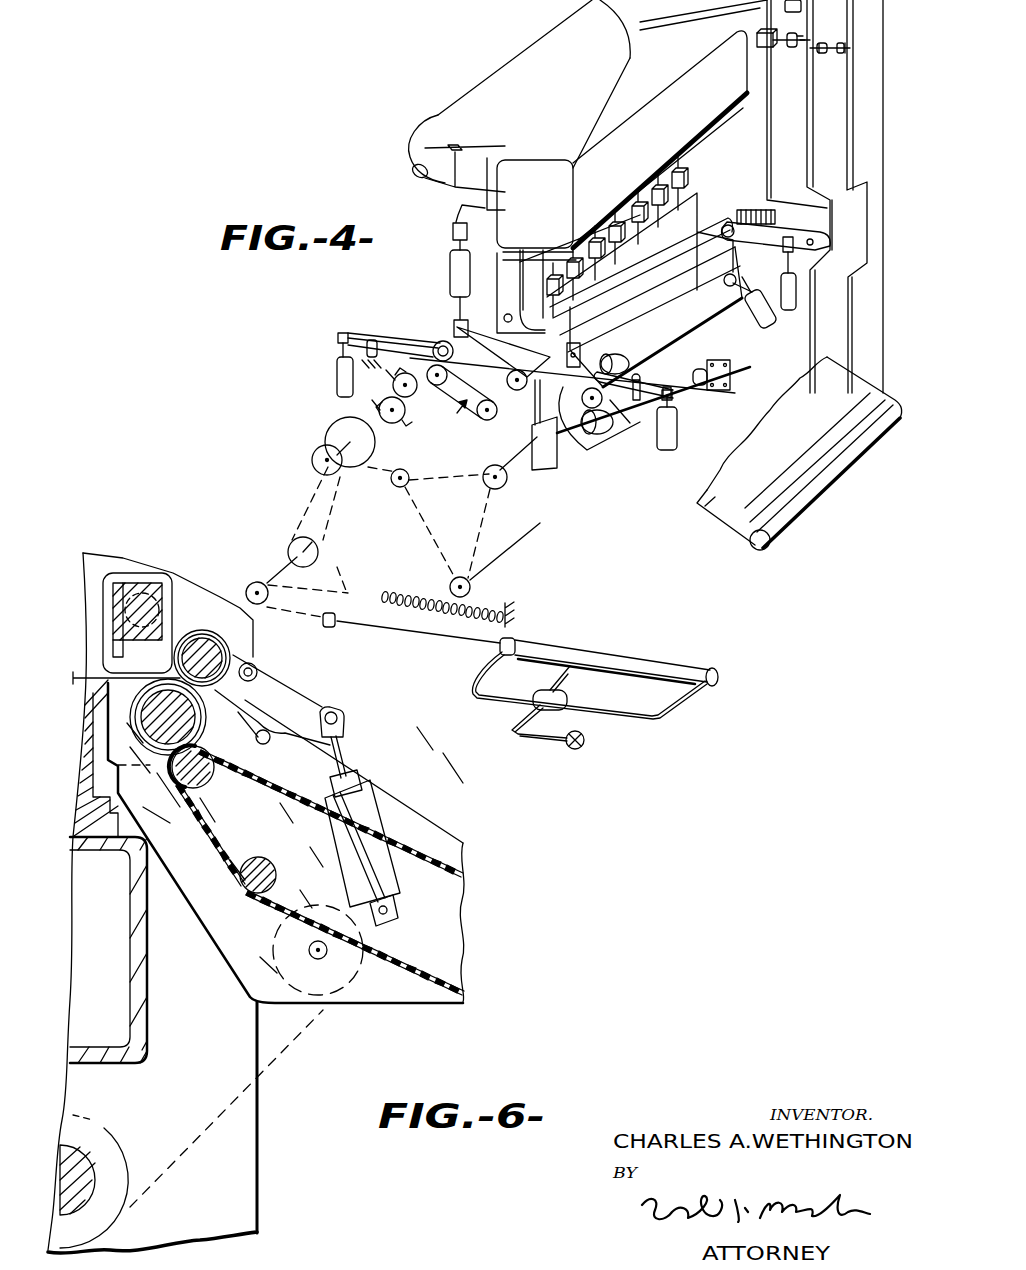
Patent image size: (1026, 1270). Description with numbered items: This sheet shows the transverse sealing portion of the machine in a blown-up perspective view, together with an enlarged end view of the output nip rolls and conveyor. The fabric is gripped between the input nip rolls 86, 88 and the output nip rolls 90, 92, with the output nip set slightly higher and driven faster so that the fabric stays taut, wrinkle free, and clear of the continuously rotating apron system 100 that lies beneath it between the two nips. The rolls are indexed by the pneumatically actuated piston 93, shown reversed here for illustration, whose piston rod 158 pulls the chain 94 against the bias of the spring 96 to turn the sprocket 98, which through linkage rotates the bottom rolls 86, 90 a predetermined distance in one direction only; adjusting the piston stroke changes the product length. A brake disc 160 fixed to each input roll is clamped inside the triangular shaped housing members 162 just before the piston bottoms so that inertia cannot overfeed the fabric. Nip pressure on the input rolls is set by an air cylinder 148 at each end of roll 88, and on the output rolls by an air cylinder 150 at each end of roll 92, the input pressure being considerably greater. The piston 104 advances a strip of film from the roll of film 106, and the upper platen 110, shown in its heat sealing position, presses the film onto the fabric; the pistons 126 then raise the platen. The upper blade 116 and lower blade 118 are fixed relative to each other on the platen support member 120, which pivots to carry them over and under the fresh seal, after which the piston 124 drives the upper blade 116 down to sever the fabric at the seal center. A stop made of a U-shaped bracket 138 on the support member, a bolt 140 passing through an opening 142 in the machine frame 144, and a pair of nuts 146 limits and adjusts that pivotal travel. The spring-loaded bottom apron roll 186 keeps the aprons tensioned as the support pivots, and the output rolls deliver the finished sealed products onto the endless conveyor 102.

In FIG. 4, the input nip roll 86 is at (438, 386).
In FIG. 4, the input nip roll 88 is at (440, 340).
In FIG. 4, the output nip roll 90 is at (612, 432).
In FIG. 6, the output nip roll 90 is at (143, 727).
In FIG. 4, the output nip roll 92 is at (627, 363).
In FIG. 6, the output nip roll 92 is at (200, 632).
In FIG. 4, the pneumatically actuated piston 93 is at (575, 650).
In FIG. 4, the chain 94 is at (340, 595).
In FIG. 4, the spring 96 is at (408, 597).
In FIG. 4, the sprocket 98 is at (253, 585).
In FIG. 4, the apron system 100 is at (457, 418).
In FIG. 4, the endless conveyor 102 is at (775, 540).
In FIG. 6, the endless conveyor 102 is at (383, 957).
In FIG. 4, the piston 104 is at (452, 262).
In FIG. 4, the roll of film 106 is at (497, 76).
In FIG. 4, the upper platen 110 is at (688, 213).
In FIG. 4, the upper blade 116 is at (566, 343).
In FIG. 6, the upper blade 116 is at (120, 630).
In FIG. 4, the lower blade 118 is at (560, 445).
In FIG. 6, the lower blade 118 is at (100, 680).
In FIG. 4, the platen support member 120 is at (755, 159).
In FIG. 4, the piston 124 is at (783, 312).
In FIG. 4, the pistons 126 is at (660, 167).
In FIG. 4, the U-shaped bracket 138 is at (757, 38).
In FIG. 4, the bolt 140 is at (785, 48).
In FIG. 4, the opening 142 is at (822, 55).
In FIG. 4, the machine frame 144 is at (865, 372).
In FIG. 4, the nuts 146 is at (797, 50).
In FIG. 4, the air cylinder 148 is at (337, 383).
In FIG. 4, the air cylinder 150 is at (678, 428).
In FIG. 6, the air cylinder 150 is at (382, 803).
In FIG. 4, the piston rod 158 is at (357, 622).
In FIG. 4, the brake disc 160 is at (372, 358).
In FIG. 4, the triangular shaped housing members 162 is at (390, 338).
In FIG. 4, the bottom apron roll 186 is at (492, 420).